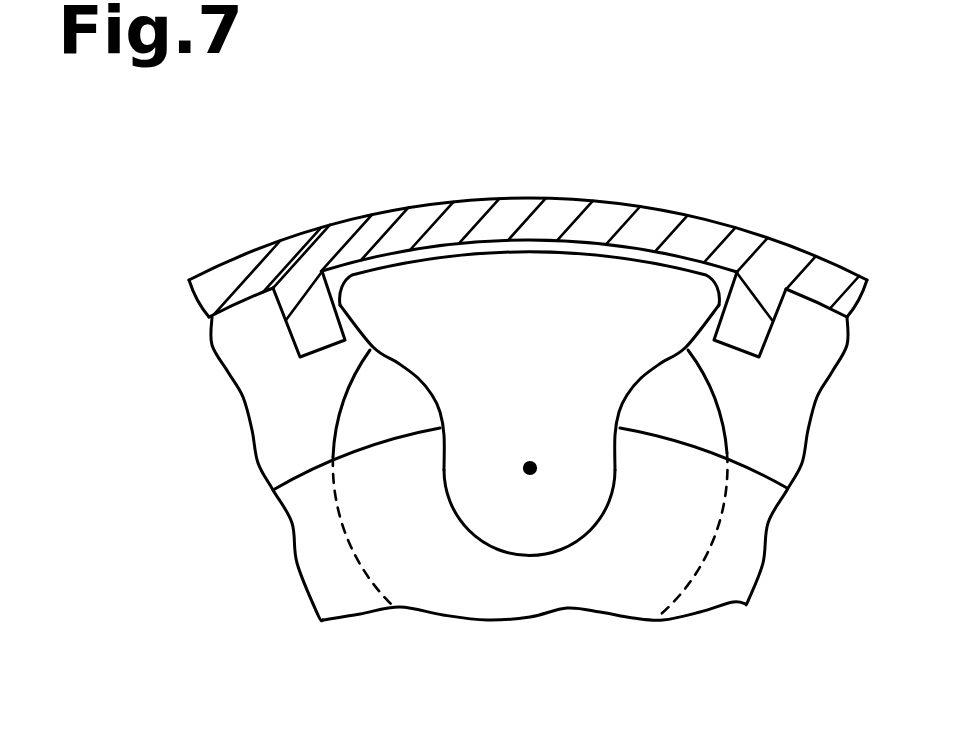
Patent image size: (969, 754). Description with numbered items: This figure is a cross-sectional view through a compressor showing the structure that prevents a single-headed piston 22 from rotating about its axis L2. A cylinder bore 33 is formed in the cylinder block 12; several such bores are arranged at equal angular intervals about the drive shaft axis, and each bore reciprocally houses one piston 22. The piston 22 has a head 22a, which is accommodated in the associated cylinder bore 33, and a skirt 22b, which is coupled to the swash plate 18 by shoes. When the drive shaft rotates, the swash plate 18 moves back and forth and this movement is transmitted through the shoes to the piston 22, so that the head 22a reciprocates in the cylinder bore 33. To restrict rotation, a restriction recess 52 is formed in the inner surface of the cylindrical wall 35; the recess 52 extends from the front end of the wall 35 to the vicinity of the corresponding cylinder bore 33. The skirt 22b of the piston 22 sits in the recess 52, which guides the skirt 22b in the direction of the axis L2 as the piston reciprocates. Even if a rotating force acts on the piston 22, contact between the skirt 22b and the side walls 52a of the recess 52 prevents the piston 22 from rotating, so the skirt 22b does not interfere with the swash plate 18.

The cylinder block 12 is at (533, 197).
The cylindrical wall 35 is at (763, 255).
The restriction recess 52 is at (377, 267).
The side wall 52a is at (337, 300).
The single-headed piston 22 is at (707, 380).
The head 22a is at (262, 462).
The skirt 22b is at (422, 337).
The swash plate 18 is at (797, 471).
The cylinder bore 33 is at (367, 575).
The axis L2 is at (530, 468).